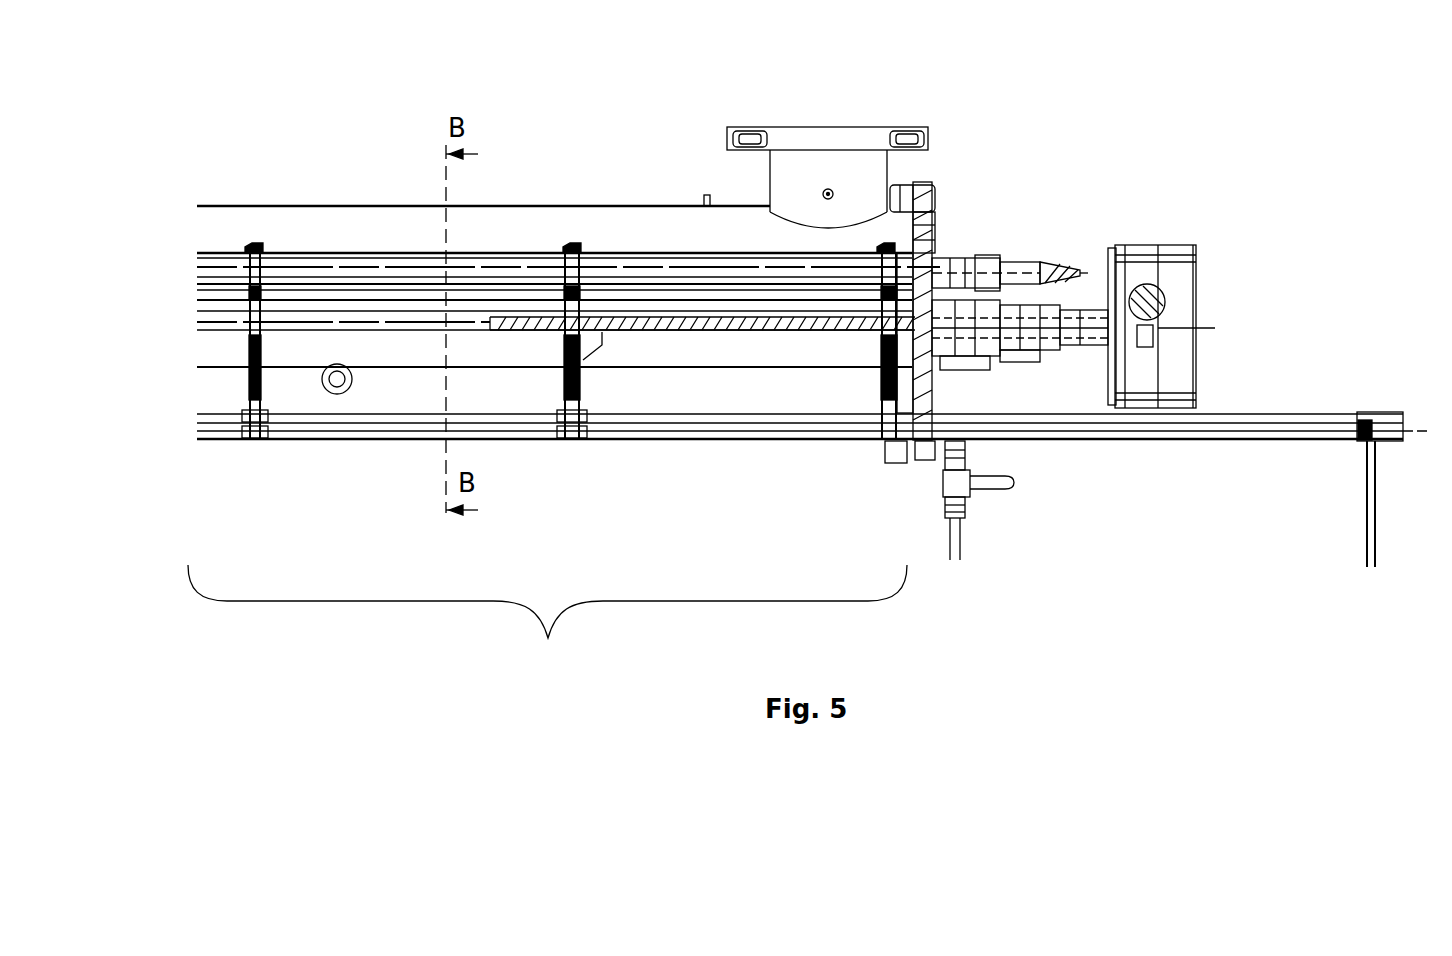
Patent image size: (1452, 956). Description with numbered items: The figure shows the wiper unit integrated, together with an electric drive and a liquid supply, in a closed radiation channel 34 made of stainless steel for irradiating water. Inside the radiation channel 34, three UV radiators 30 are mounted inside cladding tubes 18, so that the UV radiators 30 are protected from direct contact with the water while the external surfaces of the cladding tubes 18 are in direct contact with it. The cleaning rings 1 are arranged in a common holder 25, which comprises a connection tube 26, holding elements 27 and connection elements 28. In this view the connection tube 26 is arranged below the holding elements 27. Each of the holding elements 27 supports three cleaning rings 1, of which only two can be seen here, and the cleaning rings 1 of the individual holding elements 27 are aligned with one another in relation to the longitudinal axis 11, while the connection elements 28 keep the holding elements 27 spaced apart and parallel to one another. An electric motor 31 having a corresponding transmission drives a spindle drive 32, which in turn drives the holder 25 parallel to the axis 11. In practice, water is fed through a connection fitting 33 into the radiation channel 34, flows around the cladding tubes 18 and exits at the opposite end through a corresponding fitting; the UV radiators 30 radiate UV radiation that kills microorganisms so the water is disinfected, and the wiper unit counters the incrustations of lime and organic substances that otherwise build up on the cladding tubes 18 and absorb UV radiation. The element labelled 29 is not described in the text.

The cleaning ring 1 is at (255, 240).
The longitudinal axis 11 is at (209, 257).
The cladding tube 18 is at (385, 248).
The holder 25 is at (547, 626).
The connection tube 26 is at (715, 427).
The holding element 27 is at (245, 390).
The connection element 28 is at (323, 298).
The stop 29 is at (1357, 442).
The UV radiator 30 is at (1033, 307).
The electric motor 31 is at (1180, 295).
The spindle drive 32 is at (1057, 307).
The connection fitting 33 is at (887, 140).
The radiation channel 34 is at (497, 206).